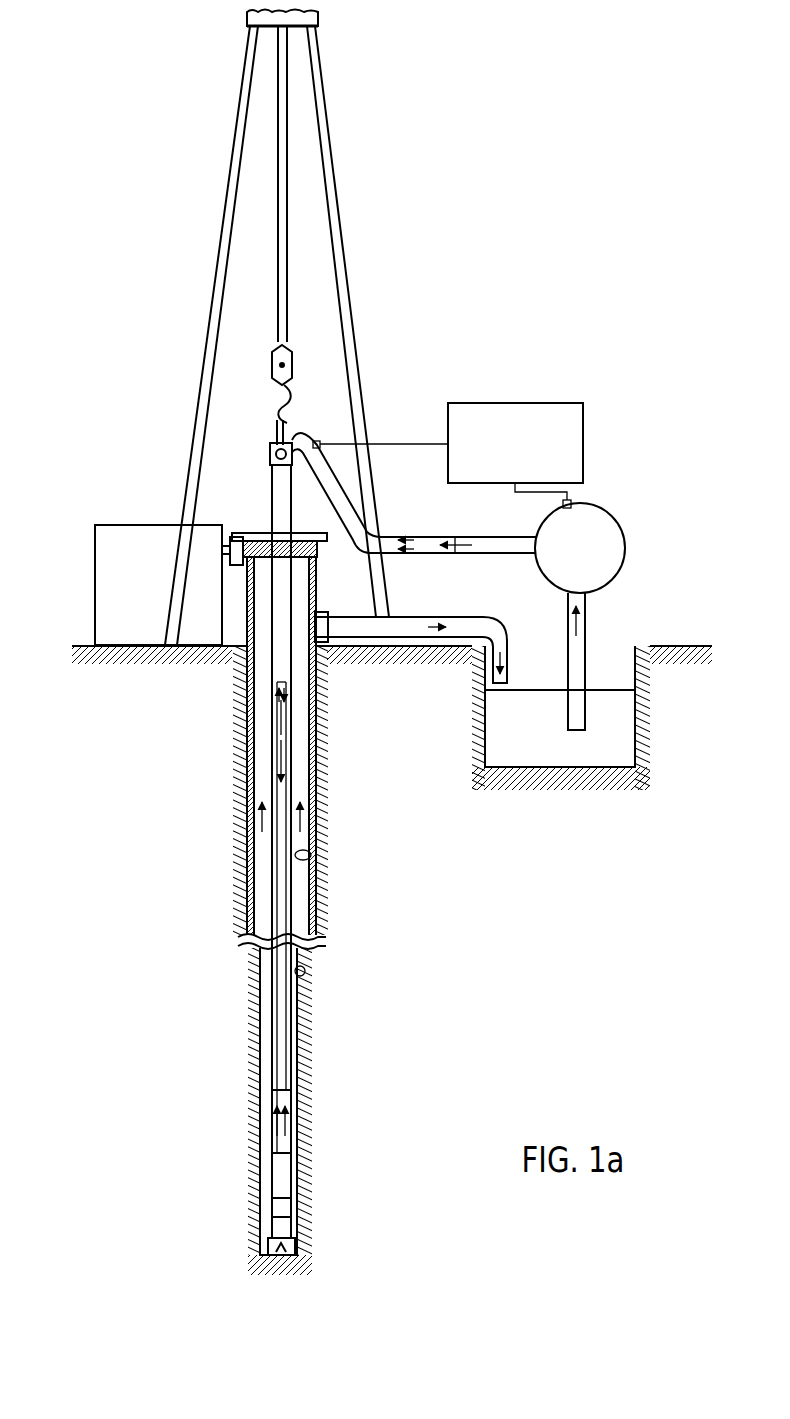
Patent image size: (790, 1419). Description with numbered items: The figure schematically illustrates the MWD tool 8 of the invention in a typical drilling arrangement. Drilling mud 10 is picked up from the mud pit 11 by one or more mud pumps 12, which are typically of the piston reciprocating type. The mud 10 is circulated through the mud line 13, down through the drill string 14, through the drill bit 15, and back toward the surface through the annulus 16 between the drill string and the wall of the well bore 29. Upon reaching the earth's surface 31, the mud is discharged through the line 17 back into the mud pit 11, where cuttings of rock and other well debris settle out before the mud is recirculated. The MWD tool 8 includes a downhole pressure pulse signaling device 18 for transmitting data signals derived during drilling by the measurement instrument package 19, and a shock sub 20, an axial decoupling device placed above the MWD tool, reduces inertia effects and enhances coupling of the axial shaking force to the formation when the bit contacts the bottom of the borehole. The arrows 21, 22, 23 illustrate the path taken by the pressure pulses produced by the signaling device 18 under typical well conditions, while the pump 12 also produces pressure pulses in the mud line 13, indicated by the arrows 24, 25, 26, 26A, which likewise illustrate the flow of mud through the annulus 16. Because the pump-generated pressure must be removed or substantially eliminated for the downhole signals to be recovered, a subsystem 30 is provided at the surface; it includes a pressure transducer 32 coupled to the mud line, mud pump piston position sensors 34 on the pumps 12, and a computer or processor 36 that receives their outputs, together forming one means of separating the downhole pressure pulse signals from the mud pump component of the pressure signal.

The MWD tool 8 is at (238, 1229).
The drilling mud 10 is at (613, 690).
The mud pit 11 is at (624, 750).
The mud pumps 12 is at (626, 551).
The mud line 13 is at (502, 553).
The drill string 14 is at (291, 724).
The drill bit 15 is at (296, 1248).
The annulus 16 is at (293, 1020).
The discharge line 17 is at (507, 624).
The downhole pressure pulse signaling device 18 is at (280, 1175).
The measurement instrument package 19 is at (278, 1207).
The shock sub 20 is at (290, 1125).
The arrow 21 is at (275, 1125).
The arrow 22 is at (275, 705).
The arrow 23 is at (385, 553).
The arrow 24 is at (462, 553).
The arrow 25 is at (283, 750).
The arrow 26 is at (300, 812).
The arrow 26A is at (256, 810).
The well bore 29 is at (308, 855).
The subsystem 30 is at (607, 381).
The earth's surface 31 is at (372, 658).
The pressure transducer 32 is at (318, 441).
The mud pump piston position sensors 34 is at (572, 504).
The processor 36 is at (551, 403).